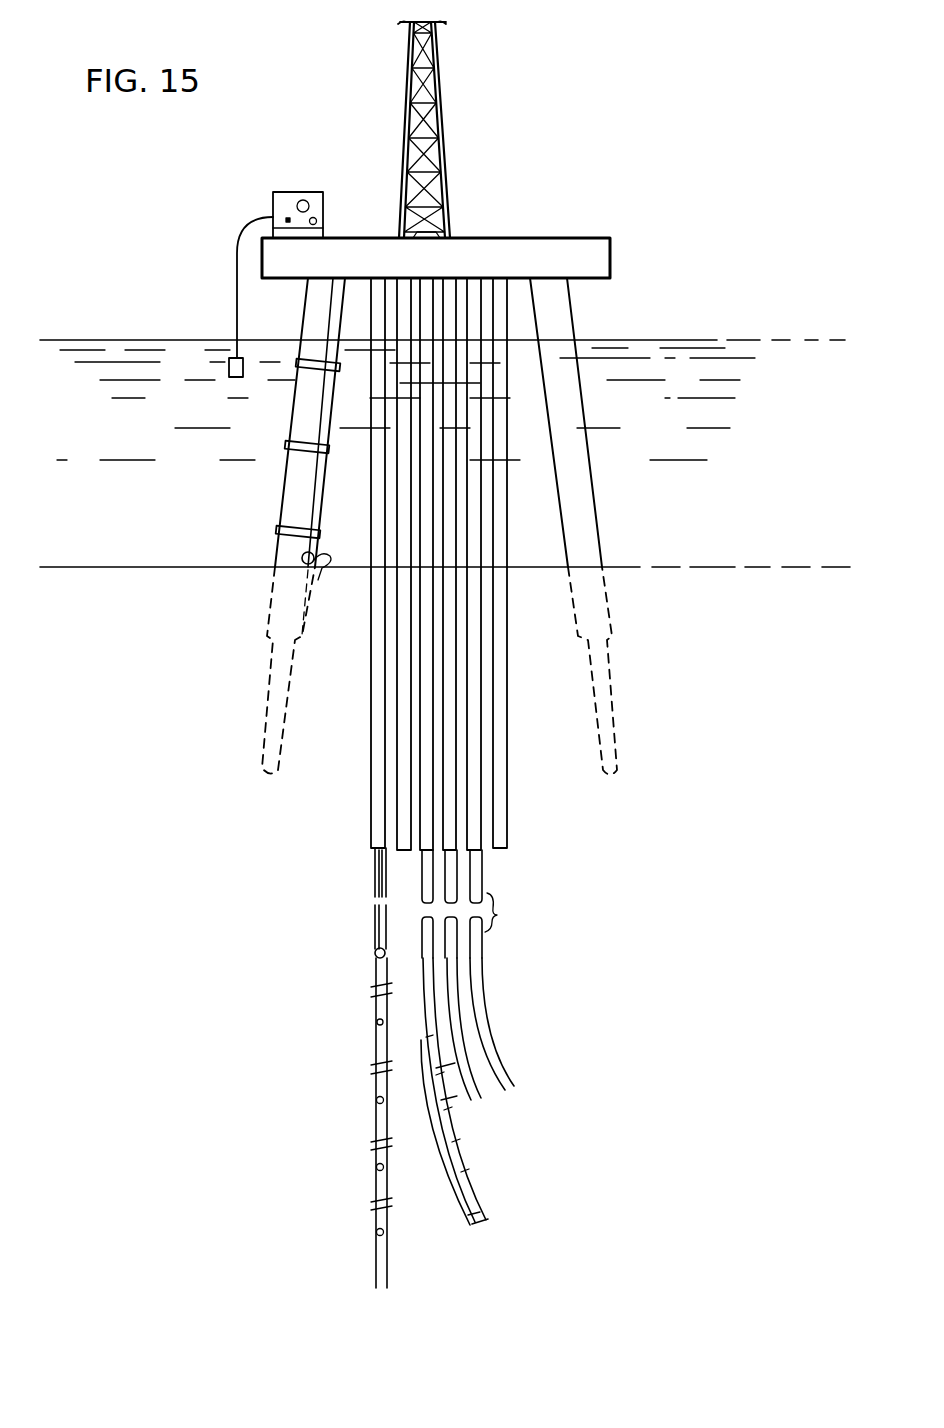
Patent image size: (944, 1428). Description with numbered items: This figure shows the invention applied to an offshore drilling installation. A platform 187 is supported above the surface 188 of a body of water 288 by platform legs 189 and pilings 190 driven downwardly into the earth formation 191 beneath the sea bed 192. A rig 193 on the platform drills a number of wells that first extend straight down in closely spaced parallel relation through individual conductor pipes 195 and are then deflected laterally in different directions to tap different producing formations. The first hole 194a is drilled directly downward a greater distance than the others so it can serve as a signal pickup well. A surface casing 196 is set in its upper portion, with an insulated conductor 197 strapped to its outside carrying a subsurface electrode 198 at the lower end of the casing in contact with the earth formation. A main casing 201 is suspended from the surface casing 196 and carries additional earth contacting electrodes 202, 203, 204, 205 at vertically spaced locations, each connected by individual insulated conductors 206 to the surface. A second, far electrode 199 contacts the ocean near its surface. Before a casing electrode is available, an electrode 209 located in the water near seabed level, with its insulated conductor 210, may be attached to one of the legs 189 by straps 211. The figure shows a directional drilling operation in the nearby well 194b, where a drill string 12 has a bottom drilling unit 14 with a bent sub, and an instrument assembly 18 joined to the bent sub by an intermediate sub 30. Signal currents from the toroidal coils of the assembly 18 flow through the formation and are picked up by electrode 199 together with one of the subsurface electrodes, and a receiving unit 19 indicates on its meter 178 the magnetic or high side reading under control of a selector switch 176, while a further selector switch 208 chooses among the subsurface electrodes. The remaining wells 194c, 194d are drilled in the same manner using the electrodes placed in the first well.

The rig 193 is at (441, 100).
The platform 187 is at (610, 263).
The receiving unit 19 is at (277, 192).
The meter 178 is at (303, 200).
The selector switch 208 is at (317, 220).
The selector switch 176 is at (272, 207).
The second electrode 199 is at (228, 370).
The surface of the ocean 188 is at (614, 340).
The body of water 288 is at (433, 404).
The sea bed 192 is at (640, 568).
The earth formation 191 is at (720, 608).
The insulated conductor 210 is at (318, 403).
The straps 211 is at (292, 466).
The electrode 209 is at (329, 575).
The platform legs 189 is at (588, 521).
The pilings 190 is at (607, 672).
The conductor pipes 195 is at (538, 818).
The insulated conductor 197 is at (374, 870).
The surface casing 196 is at (376, 918).
The subsurface electrode 198 is at (376, 951).
The first hole 194a is at (360, 1152).
The insulated conductors 206 is at (378, 995).
The earth contacting electrode 202 is at (378, 1023).
The main casing 201 is at (377, 1078).
The earth contacting electrode 203 is at (376, 1103).
The earth contacting electrode 204 is at (377, 1173).
The earth contacting electrode 205 is at (378, 1234).
The well 194d is at (483, 973).
The well 194c is at (462, 1027).
The second well 194b is at (474, 1158).
The drill string 12 is at (457, 1128).
The instrument assembly 18 is at (438, 1071).
The intermediate sub 30 is at (442, 1104).
The bottom drilling unit 14 is at (488, 1195).